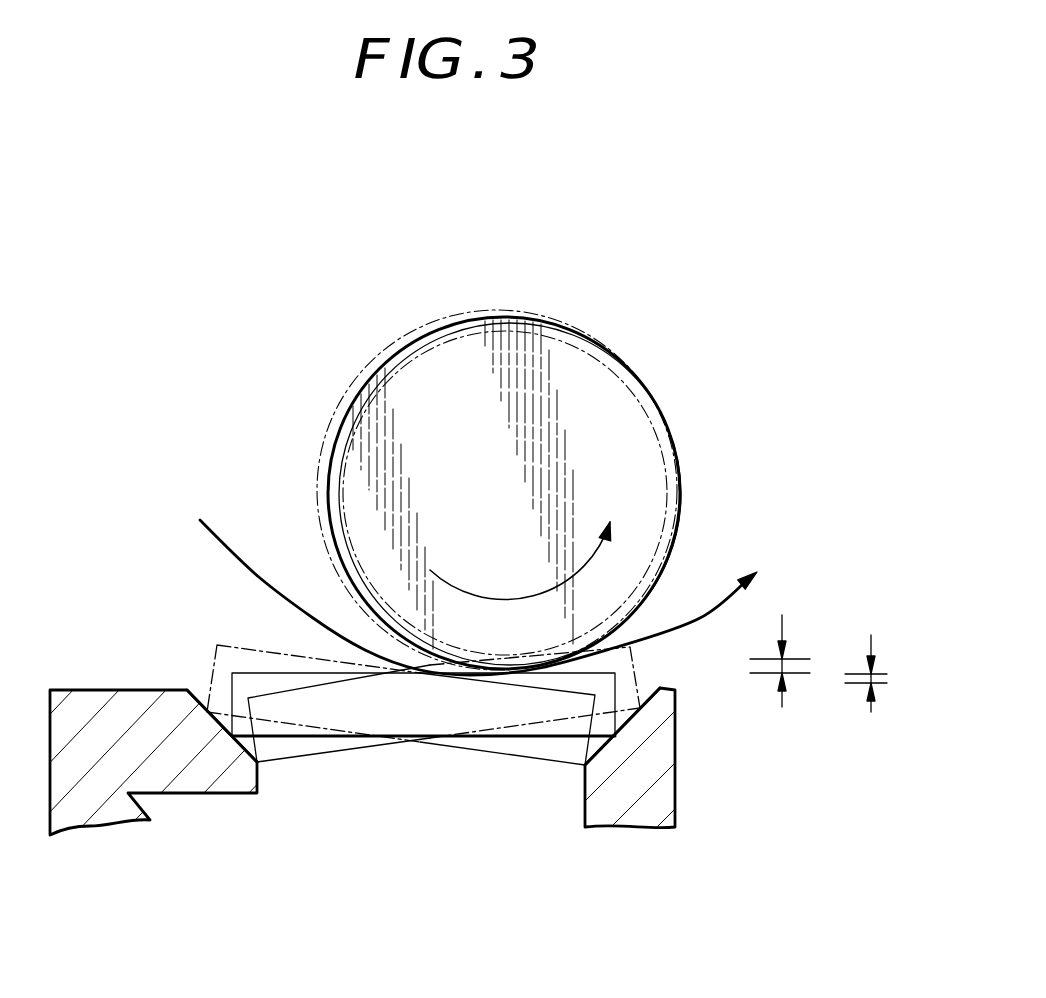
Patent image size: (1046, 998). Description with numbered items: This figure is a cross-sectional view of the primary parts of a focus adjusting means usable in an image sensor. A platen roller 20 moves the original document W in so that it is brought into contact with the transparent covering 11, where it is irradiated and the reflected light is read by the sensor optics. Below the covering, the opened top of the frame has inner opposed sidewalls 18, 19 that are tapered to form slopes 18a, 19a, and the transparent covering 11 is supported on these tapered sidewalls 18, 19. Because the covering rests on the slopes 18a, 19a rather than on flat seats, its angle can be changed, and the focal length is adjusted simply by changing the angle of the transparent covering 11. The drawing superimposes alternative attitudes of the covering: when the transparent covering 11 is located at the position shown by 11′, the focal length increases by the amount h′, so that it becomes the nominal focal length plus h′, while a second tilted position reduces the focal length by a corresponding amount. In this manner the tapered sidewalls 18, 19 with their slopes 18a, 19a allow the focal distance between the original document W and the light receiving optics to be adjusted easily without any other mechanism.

The platen roller 20 is at (420, 397).
The original document W is at (293, 607).
The transparent covering 11 is at (413, 705).
The position of the transparent covering 11′ is at (290, 758).
The inner sidewall 18 is at (195, 770).
The slope 18a is at (203, 707).
The inner sidewall 19 is at (620, 793).
The slope 19a is at (650, 692).
The focal length increment h′ is at (794, 661).